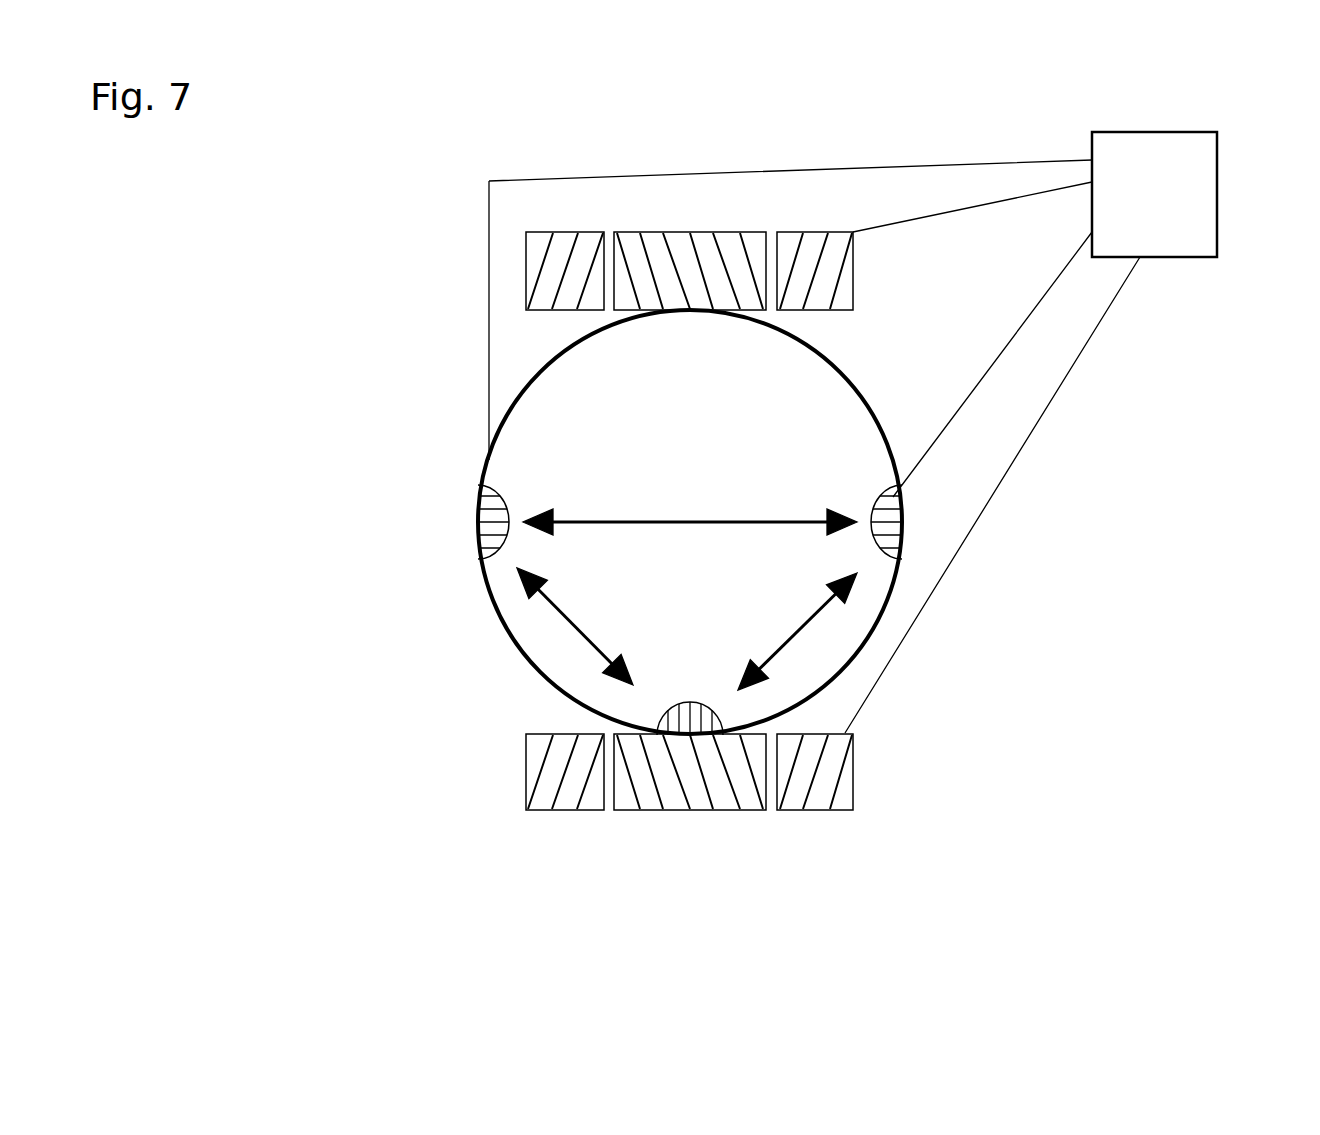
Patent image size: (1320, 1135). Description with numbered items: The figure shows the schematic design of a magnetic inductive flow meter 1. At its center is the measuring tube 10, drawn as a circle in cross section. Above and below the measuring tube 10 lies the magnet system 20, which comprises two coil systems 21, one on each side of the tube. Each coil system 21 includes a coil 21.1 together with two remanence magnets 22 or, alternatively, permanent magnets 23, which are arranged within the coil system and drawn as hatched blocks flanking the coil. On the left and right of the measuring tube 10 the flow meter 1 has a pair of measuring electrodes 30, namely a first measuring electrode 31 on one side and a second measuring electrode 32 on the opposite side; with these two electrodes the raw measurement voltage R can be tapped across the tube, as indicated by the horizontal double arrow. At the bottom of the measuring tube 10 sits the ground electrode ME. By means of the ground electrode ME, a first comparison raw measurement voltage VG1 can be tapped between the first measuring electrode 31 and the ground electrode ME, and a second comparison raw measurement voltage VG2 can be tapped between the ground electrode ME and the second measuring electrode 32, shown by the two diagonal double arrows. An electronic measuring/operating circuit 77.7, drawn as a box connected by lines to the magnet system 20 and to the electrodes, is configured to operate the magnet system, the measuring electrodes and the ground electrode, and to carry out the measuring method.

The magnetic inductive flow meter 1 is at (965, 683).
The measuring tube 10 is at (510, 637).
The magnet system 20 is at (697, 492).
The coil system 21 is at (836, 295).
The coil 21.1 is at (815, 282).
The remanence magnet 22 is at (690, 492).
The permanent magnet 23 is at (689, 207).
The pair of measuring electrodes 30 is at (882, 497).
The first measuring electrode 31 is at (477, 537).
The second measuring electrode 32 is at (903, 538).
The electronic measuring/operating circuit 77.7 is at (1154, 194).
The raw measurement voltage R is at (613, 508).
The ground electrode ME is at (670, 730).
The first comparison raw measurement voltage VG1 is at (567, 633).
The second comparison raw measurement voltage VG2 is at (828, 622).